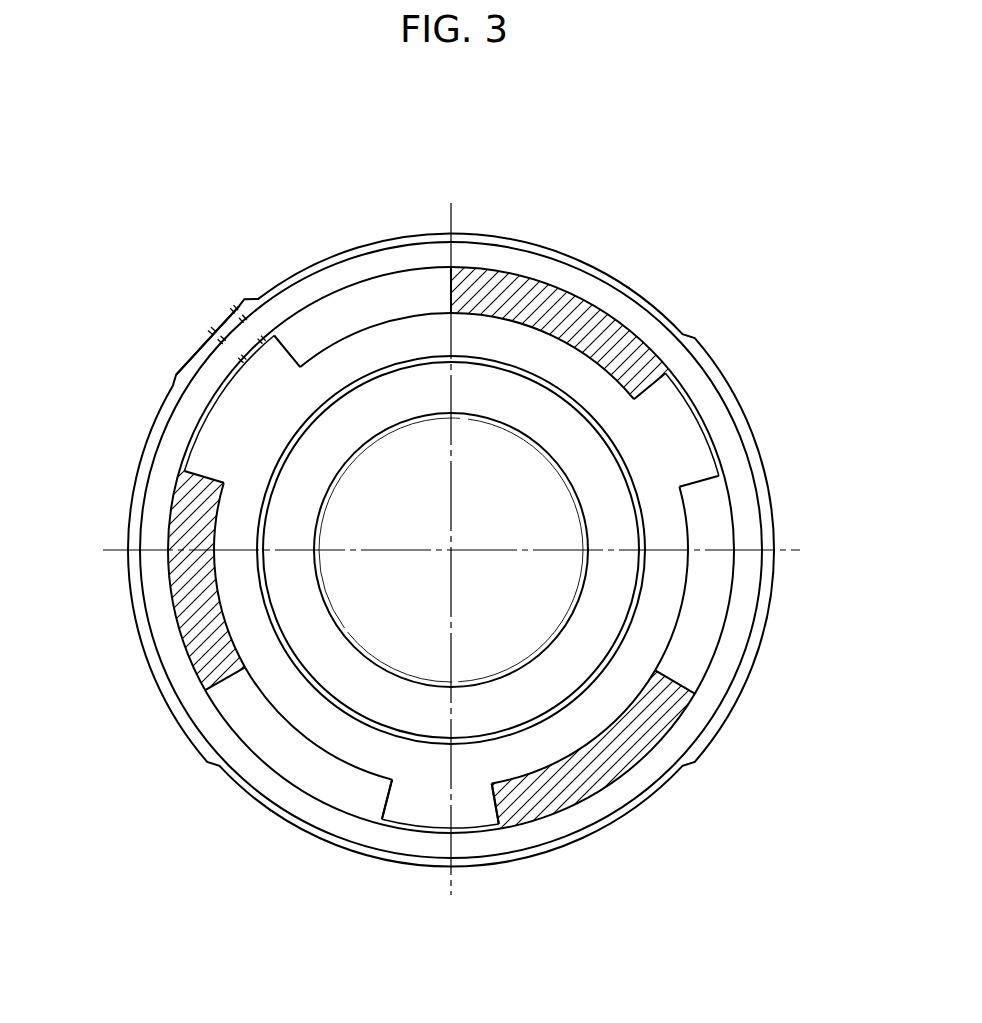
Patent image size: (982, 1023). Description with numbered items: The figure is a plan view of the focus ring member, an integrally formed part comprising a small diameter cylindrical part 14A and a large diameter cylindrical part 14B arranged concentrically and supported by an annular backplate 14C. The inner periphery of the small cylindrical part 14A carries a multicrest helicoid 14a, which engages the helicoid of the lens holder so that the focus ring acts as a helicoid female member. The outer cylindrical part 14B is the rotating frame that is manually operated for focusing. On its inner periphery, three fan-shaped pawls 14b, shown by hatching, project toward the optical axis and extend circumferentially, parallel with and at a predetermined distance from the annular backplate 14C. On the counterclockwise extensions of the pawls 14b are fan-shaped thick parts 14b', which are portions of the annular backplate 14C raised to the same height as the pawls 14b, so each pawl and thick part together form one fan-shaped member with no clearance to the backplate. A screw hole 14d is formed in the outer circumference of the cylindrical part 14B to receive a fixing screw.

The small diameter cylindrical part 14A is at (619, 453).
The multicrest helicoid 14a is at (548, 600).
The large diameter cylindrical part 14B is at (313, 835).
The fan-shaped pawls 14b is at (491, 550).
The fan-shaped thick parts 14b' is at (517, 513).
The annular backplate 14C is at (422, 782).
The screw hole 14d is at (249, 297).